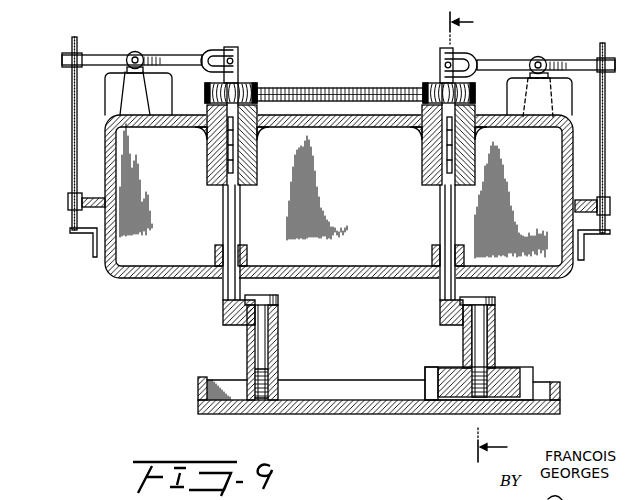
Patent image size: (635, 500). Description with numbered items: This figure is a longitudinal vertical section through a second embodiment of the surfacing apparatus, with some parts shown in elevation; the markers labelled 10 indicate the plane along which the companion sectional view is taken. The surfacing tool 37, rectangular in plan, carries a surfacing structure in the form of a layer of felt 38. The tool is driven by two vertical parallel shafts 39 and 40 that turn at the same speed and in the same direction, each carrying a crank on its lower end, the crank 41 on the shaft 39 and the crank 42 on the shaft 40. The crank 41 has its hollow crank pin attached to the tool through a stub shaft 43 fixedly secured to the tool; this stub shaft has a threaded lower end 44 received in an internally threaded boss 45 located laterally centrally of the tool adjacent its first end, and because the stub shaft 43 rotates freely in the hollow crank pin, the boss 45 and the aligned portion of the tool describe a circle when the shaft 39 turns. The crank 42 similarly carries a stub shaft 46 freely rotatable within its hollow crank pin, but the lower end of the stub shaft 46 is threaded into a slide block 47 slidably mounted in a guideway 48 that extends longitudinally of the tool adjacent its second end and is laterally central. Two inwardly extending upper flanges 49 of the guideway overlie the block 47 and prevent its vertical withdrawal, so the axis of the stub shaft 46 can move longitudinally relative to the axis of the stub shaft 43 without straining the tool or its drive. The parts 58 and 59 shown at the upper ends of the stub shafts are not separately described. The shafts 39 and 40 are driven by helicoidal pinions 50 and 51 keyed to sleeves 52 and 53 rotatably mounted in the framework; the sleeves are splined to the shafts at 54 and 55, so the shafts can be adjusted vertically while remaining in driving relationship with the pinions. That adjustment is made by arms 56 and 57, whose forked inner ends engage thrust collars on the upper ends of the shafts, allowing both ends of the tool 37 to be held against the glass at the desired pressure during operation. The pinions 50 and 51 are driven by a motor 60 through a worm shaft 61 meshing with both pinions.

The section line 10- 10 is at (467, 237).
The surfacing tool 37 is at (207, 393).
The layer of felt 38 is at (268, 413).
The shaft 39 is at (226, 211).
The shaft 40 is at (441, 211).
The crank 41 is at (222, 314).
The crank 42 is at (440, 320).
The stub shaft 43 is at (271, 333).
The threaded lower end 44 is at (271, 378).
The internally threaded boss 45 is at (272, 395).
The stub shaft 46 is at (497, 325).
The slide block 47 is at (500, 380).
The guideway 48 is at (525, 385).
The upper flanges 49 is at (430, 368).
The helicoidal pinion 50 is at (241, 84).
The helicoidal pinion 51 is at (426, 84).
The sleeve 52 is at (253, 121).
The sleeve 53 is at (425, 122).
The spline 54 is at (246, 161).
The spline 55 is at (447, 150).
The arm 56 is at (170, 56).
The arm 57 is at (495, 62).
The left nut 58 is at (276, 300).
The right nut 59 is at (496, 302).
The motor 60 is at (118, 97).
The worm shaft 61 is at (336, 88).